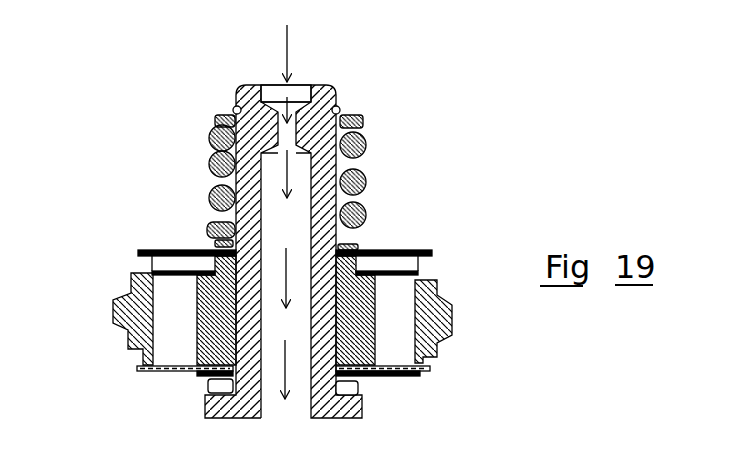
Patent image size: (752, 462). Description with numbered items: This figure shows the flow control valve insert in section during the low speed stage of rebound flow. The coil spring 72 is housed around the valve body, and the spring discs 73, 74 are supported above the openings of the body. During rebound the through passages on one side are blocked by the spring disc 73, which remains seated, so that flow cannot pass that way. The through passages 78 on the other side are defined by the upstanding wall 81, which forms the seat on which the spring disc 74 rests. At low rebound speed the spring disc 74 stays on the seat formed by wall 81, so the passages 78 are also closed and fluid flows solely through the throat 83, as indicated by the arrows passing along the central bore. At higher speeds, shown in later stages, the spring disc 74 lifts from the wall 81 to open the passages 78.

The coil spring 72 is at (362, 188).
The spring disc 73 is at (380, 248).
The spring disc 74 is at (197, 377).
The through passage 78 is at (397, 378).
The upstanding wall 81 is at (137, 352).
The throat 83 is at (282, 90).